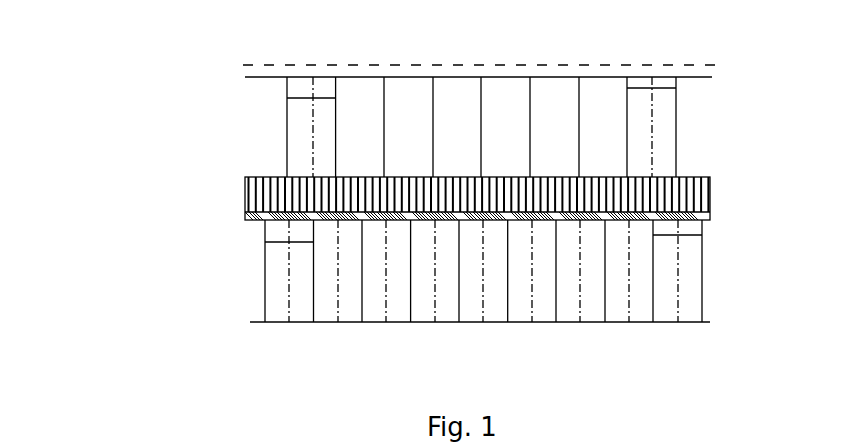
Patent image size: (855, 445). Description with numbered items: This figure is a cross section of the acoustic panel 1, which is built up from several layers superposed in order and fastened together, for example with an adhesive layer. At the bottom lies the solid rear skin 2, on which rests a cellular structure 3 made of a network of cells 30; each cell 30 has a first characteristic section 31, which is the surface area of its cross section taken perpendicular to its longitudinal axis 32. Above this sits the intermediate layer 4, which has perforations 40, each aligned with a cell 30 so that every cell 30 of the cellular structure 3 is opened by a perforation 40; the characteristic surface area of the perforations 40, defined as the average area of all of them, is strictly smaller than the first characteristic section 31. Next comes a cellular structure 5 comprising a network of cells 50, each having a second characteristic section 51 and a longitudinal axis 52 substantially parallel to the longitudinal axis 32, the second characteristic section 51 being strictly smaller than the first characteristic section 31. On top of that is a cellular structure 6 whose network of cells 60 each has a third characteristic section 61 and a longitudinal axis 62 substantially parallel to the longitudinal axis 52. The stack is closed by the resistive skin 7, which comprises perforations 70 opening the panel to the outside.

The acoustic panel 1 is at (128, 114).
The solid rear skin 2 is at (252, 323).
The cellular structure 3 is at (212, 298).
The cell 30 is at (276, 272).
The first characteristic section 31 is at (265, 242).
The longitudinal axis 32 is at (291, 286).
The intermediate layer 4 is at (700, 222).
The perforation 40 is at (323, 222).
The cellular structure 5 is at (726, 201).
The cell 50 is at (248, 195).
The second characteristic section 51 is at (430, 198).
The longitudinal axis 52 is at (552, 198).
The cellular structure 6 is at (708, 127).
The cell 60 is at (298, 135).
The third characteristic section 61 is at (287, 98).
The longitudinal axis 62 is at (312, 92).
The resistive skin 7 is at (243, 64).
The perforation 70 is at (345, 65).